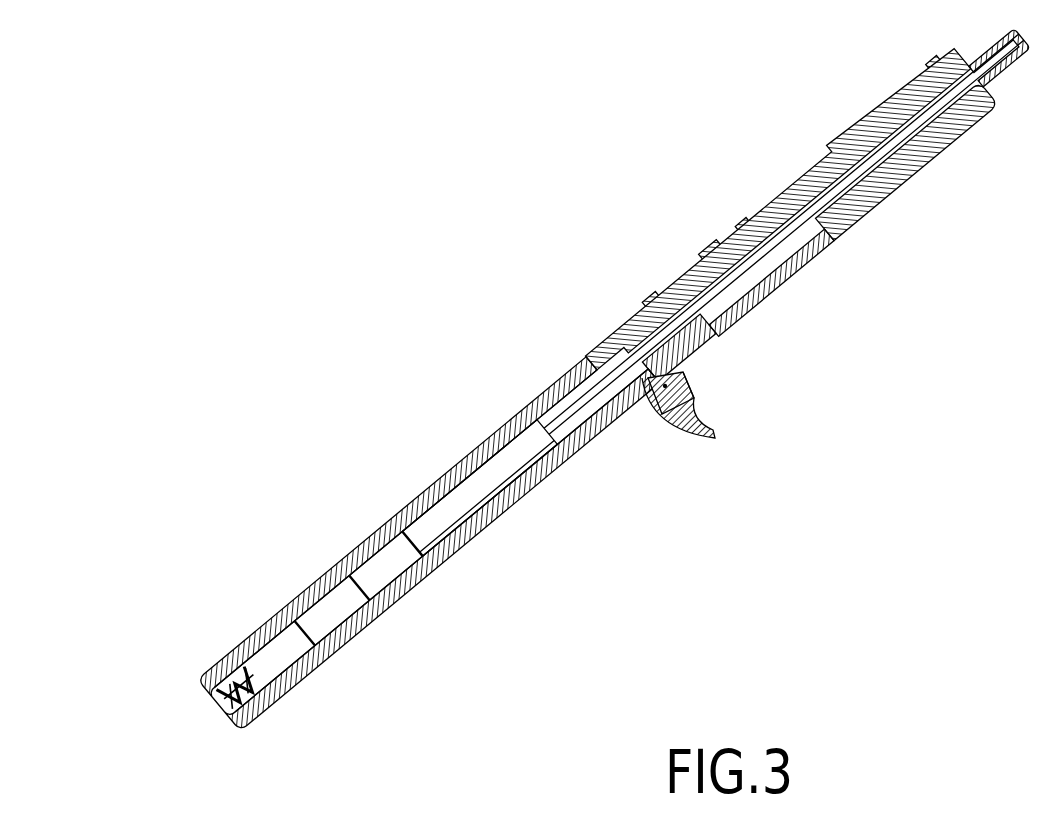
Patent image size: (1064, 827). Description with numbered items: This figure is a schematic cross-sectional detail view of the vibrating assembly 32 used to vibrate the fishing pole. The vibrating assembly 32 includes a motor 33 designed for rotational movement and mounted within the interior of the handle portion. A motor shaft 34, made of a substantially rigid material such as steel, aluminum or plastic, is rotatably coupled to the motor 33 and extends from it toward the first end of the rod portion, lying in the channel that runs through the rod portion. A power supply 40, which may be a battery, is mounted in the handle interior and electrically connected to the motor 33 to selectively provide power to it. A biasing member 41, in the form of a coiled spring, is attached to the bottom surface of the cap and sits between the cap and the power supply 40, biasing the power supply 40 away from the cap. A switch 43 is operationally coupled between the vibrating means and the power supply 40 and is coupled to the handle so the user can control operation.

The vibrating assembly 32 is at (553, 498).
The motor 33 is at (480, 483).
The motor shaft 34 is at (735, 250).
The power supply 40 is at (355, 643).
The biasing member 41 is at (236, 660).
The switch 43 is at (703, 398).